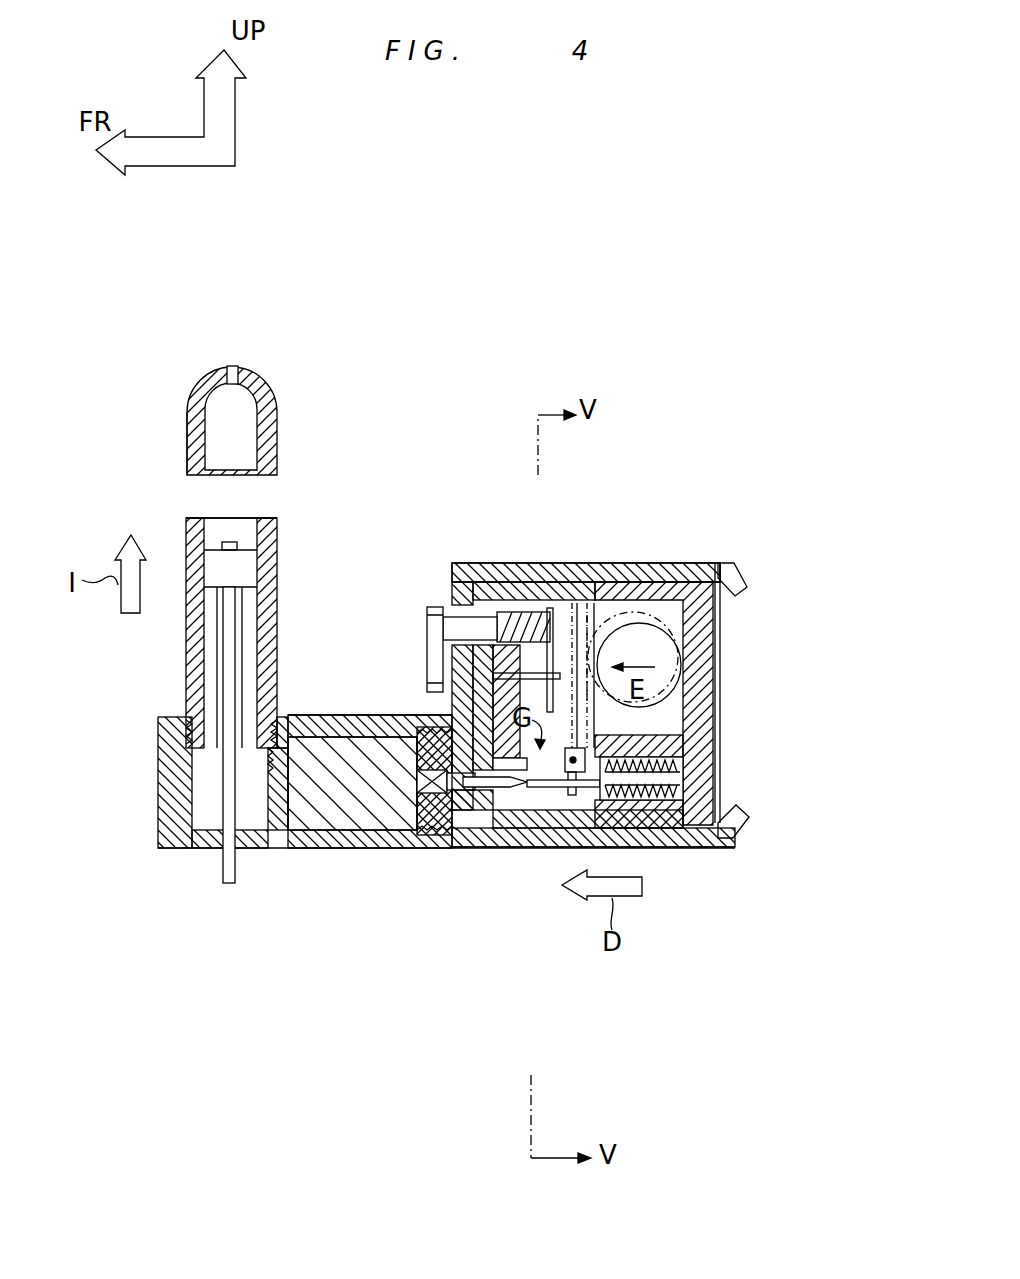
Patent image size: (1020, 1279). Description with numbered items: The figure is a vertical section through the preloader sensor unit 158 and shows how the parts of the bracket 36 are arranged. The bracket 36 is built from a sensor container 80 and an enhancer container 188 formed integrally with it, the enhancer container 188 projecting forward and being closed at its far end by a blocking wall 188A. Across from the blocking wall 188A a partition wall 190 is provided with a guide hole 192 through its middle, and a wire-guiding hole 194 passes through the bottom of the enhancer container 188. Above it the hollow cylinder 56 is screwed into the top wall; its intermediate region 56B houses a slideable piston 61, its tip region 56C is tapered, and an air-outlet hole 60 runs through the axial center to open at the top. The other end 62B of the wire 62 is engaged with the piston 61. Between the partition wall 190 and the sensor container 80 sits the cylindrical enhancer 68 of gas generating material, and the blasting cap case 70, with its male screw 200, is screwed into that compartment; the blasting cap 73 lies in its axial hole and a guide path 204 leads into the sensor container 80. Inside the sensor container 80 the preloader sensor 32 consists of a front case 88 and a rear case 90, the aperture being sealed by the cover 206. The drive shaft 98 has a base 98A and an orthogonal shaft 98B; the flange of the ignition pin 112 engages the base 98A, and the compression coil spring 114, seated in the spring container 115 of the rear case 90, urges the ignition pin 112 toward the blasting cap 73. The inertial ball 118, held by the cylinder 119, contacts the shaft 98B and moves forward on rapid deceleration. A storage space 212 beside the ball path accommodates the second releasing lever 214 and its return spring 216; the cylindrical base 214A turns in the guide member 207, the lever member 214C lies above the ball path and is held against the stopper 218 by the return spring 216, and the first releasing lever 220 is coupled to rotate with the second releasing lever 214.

The cylinder 56 is at (200, 390).
The air-outlet hole 60 is at (232, 372).
The tip region 56C is at (190, 420).
The intermediate region 56B is at (187, 528).
The piston 61 is at (250, 560).
The other end of wire 62B is at (205, 628).
The wire 62 is at (225, 869).
The blocking wall 188A is at (158, 800).
The wire-guiding hole 194 is at (222, 848).
The guide hole 192 is at (270, 770).
The partition wall 190 is at (279, 820).
The male screw 200 is at (420, 840).
The enhancer 68 is at (353, 820).
The blasting cap case 70 is at (447, 830).
The enhancer container 188 is at (327, 694).
The sensor unit 158 is at (402, 328).
The front case 88 is at (522, 848).
The sensor container 80 is at (606, 541).
The compression coil spring 114 is at (665, 835).
The rear case 90 is at (645, 848).
The preloader sensor 32 is at (645, 1040).
The inertial ball 118 is at (690, 640).
The bracket 36 is at (735, 836).
The cylindrical base 214A is at (485, 598).
The second releasing lever 214 is at (467, 586).
The stopper 218 is at (550, 680).
The return spring 216 is at (550, 610).
The lever member 214C is at (578, 604).
The guide member 207 is at (460, 618).
The first releasing lever 220 is at (428, 640).
The storage space 212 is at (478, 690).
The blasting cap 73 is at (450, 745).
The guide path 204 is at (478, 790).
The ignition pin 112 is at (552, 790).
The drive shaft 98 is at (758, 423).
The base 98A is at (653, 600).
The shaft 98B is at (618, 575).
The cylinder 119 is at (690, 700).
The cover 206 is at (720, 740).
The spring container 115 is at (690, 790).